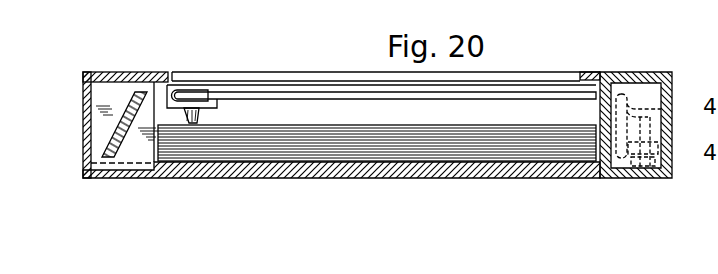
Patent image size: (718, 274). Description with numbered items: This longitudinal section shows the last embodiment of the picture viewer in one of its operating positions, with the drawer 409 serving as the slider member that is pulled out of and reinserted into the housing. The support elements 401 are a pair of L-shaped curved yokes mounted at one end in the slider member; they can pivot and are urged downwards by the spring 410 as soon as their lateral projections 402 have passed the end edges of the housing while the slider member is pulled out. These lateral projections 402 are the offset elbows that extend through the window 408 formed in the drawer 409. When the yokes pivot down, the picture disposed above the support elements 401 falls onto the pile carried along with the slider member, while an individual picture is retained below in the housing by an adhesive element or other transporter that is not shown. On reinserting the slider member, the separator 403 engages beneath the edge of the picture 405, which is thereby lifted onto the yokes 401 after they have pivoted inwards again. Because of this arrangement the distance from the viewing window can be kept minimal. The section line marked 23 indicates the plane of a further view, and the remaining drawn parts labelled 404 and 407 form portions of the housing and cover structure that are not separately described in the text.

The section line 23- 23 is at (115, 47).
The support elements 401 is at (329, 98).
The lateral projections 402 is at (200, 93).
The separator 403 is at (112, 153).
The cover plate 404 is at (555, 83).
The picture 405 is at (392, 162).
The housing base wall 407 is at (500, 165).
The window 408 is at (213, 108).
The drawer 409 is at (664, 66).
The spring 410 is at (667, 107).